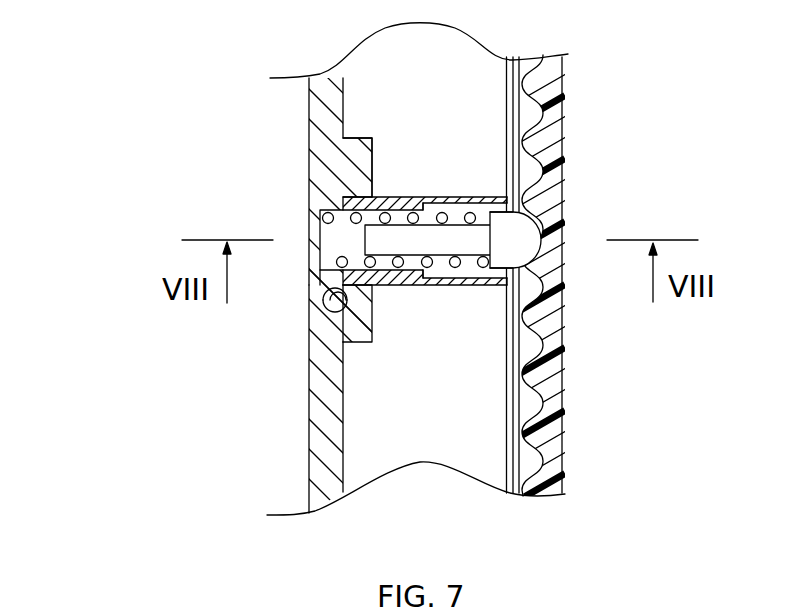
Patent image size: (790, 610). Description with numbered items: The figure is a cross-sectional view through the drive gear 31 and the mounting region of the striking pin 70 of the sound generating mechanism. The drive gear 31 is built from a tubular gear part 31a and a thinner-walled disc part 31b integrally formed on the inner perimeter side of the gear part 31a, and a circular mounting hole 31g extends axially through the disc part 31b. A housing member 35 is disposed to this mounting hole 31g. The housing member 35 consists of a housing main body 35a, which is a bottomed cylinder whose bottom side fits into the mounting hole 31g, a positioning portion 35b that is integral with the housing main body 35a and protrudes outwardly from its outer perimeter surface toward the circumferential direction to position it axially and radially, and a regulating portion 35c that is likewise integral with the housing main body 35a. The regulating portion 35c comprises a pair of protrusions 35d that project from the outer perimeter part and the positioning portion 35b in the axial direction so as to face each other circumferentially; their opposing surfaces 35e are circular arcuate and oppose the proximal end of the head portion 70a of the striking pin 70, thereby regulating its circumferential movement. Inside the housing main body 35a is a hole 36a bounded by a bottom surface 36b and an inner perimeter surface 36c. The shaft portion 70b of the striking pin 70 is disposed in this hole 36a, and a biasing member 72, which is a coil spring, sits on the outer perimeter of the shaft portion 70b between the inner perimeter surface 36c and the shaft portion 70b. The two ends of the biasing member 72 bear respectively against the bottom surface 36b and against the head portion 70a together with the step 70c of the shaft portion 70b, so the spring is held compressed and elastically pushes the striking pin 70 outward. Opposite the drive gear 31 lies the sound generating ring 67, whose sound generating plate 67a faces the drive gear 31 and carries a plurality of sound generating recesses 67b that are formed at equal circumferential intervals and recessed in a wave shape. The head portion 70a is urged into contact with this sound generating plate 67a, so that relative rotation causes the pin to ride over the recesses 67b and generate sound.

The drive gear 31 is at (287, 437).
The gear part 31a is at (334, 430).
The disc part 31b is at (345, 437).
The mounting hole 31g is at (355, 288).
The housing member 35 is at (314, 185).
The housing main body 35a is at (385, 197).
The positioning portion 35b is at (362, 143).
The regulating portion 35c is at (489, 165).
The protrusions 35d is at (469, 197).
The opposing surfaces 35e is at (436, 203).
The hole 36a is at (98, 322).
The bottom surface 36b is at (345, 283).
The inner perimeter surface 36c is at (348, 295).
The sound generating ring 67 is at (586, 83).
The sound generating plate 67a is at (506, 463).
The sound generating recesses 67b is at (562, 458).
The striking pin 70 is at (350, 237).
The head portion 70a is at (517, 233).
The shaft portion 70b is at (487, 199).
The step 70c is at (505, 283).
The biasing member 72 is at (350, 214).